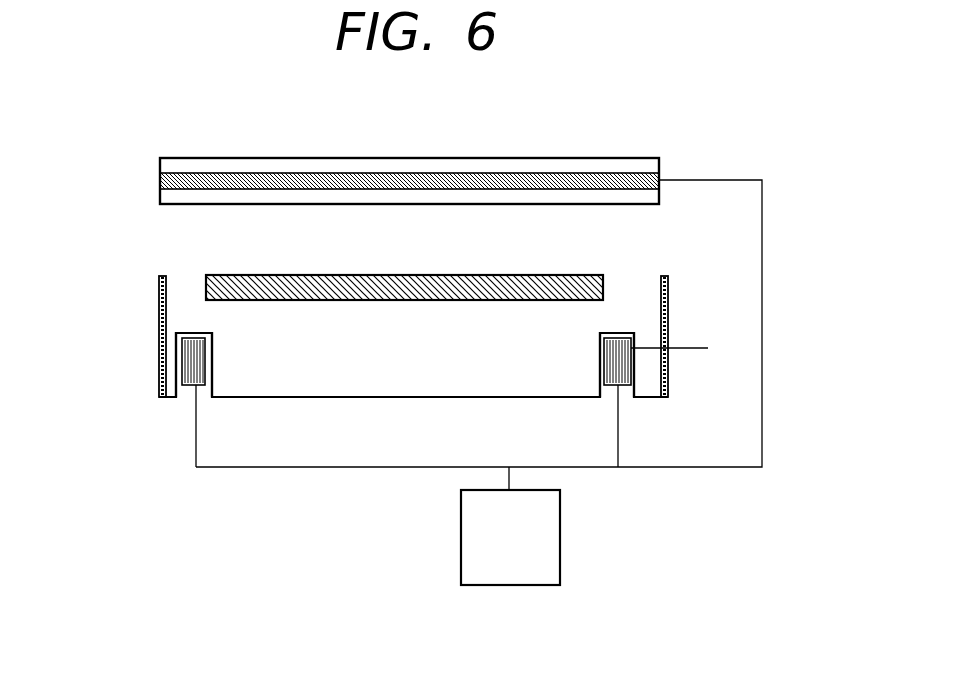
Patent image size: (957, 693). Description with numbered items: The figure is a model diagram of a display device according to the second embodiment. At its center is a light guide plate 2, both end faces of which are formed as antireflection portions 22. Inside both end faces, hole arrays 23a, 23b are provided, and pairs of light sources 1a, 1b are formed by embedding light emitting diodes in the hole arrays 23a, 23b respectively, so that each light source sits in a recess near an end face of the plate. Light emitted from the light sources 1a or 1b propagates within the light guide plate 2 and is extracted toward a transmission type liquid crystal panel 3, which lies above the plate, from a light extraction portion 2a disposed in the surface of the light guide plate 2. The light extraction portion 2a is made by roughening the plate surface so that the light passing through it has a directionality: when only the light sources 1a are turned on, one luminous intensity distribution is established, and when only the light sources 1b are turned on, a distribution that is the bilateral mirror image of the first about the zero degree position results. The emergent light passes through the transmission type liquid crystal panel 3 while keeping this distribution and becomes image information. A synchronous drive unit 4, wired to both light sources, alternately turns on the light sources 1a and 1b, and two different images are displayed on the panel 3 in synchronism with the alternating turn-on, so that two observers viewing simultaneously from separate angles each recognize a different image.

The transmission type liquid crystal panel 3 is at (565, 163).
The antireflection portion 22 is at (159, 309).
The light guide plate 2 is at (302, 375).
The light extraction portion 2a is at (400, 290).
The hole array 23a is at (192, 332).
The hole array 23b is at (619, 332).
The light source 1a is at (187, 362).
The light source 1b is at (620, 362).
The synchronous drive unit 4 is at (490, 563).